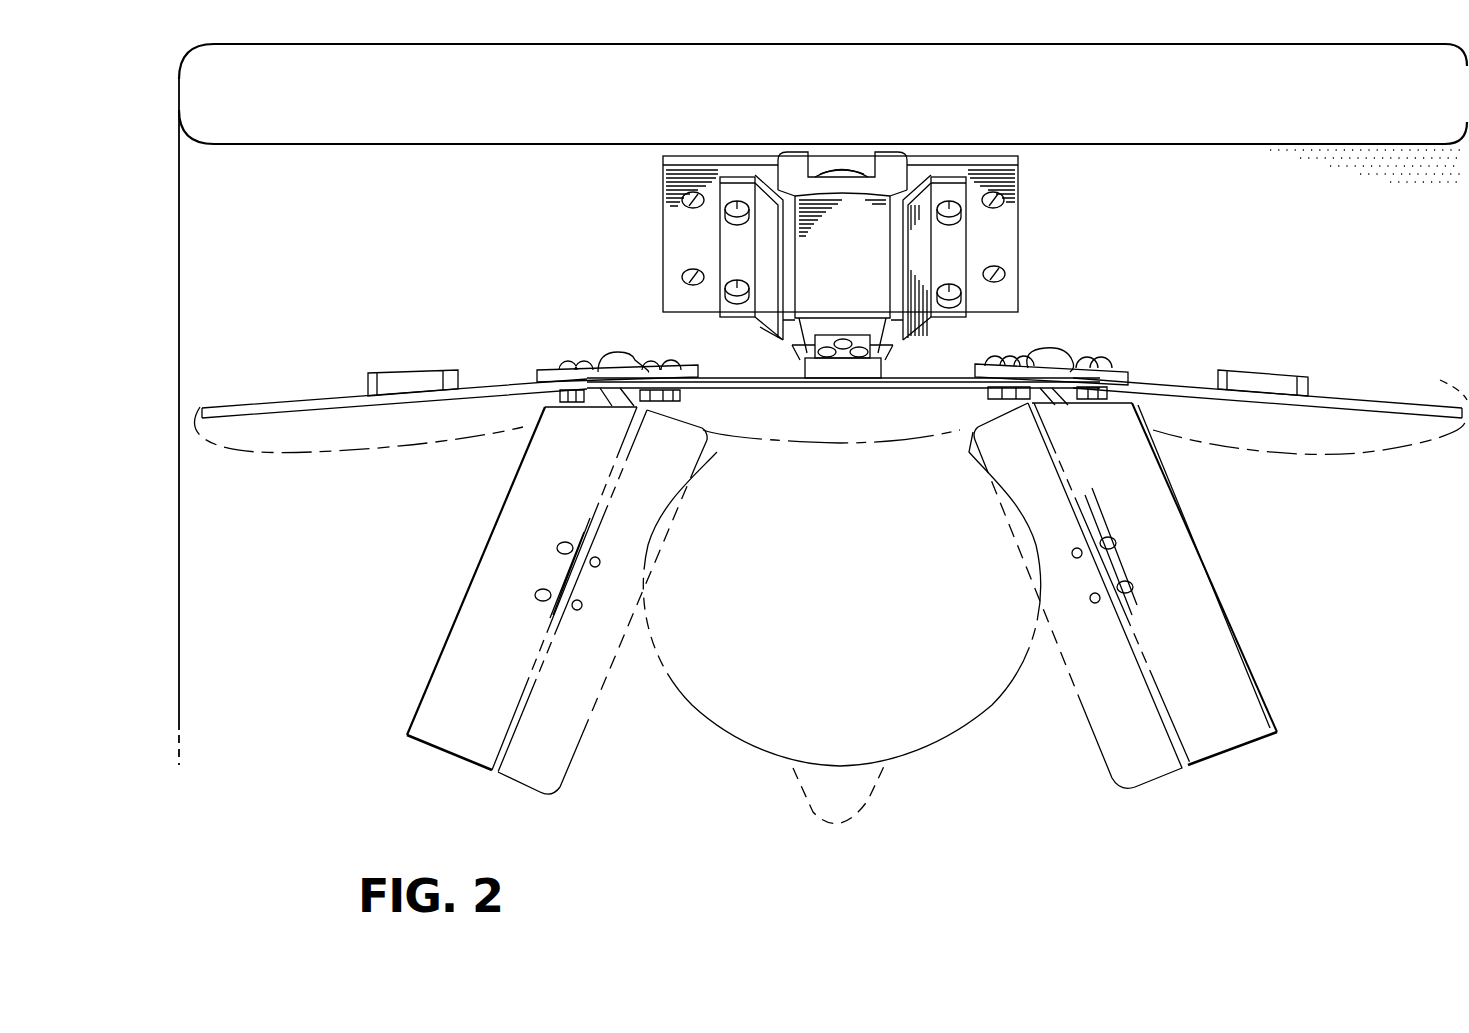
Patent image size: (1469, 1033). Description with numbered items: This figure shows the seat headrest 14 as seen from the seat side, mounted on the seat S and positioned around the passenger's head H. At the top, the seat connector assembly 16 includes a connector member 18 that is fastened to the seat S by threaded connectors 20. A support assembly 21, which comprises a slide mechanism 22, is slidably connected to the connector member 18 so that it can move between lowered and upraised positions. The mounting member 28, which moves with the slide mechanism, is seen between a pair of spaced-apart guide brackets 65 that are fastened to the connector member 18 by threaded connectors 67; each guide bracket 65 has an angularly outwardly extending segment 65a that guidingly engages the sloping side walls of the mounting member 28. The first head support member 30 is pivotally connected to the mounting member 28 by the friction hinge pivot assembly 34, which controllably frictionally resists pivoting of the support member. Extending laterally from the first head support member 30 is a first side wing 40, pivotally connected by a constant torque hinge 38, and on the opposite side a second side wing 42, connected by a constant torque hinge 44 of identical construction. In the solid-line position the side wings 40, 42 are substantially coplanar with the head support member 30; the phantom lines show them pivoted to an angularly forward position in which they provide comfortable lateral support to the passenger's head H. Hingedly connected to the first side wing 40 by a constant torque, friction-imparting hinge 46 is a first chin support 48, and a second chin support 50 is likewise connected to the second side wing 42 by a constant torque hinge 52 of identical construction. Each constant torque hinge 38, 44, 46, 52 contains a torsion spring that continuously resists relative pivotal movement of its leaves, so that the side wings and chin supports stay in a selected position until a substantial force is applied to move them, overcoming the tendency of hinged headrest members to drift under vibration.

The seat headrest 14 is at (680, 129).
The seat connector assembly 16 is at (632, 257).
The connector member 18 is at (663, 217).
The threaded connectors 20 is at (688, 197).
The support assembly 21 is at (862, 172).
The slide mechanism 22 is at (800, 166).
The mounting member 28 is at (842, 256).
The first head support member 30 is at (780, 386).
The friction hinge pivot assembly 34 is at (851, 360).
The constant torque hinge 38 is at (540, 372).
The first side wing 40 is at (266, 400).
The second side wing 42 is at (1365, 400).
The constant torque hinge 44 is at (1065, 368).
The constant torque friction-imparting hinge 46 is at (403, 378).
The first chin support 48 is at (558, 733).
The second chin support 50 is at (1098, 740).
The constant torque hinge 52 is at (1270, 380).
The guide brackets 65 is at (738, 185).
The angularly outwardly extending segment 65a is at (915, 293).
The threaded connectors 67 is at (735, 284).
The passenger's head H is at (757, 748).
The seat S is at (363, 225).